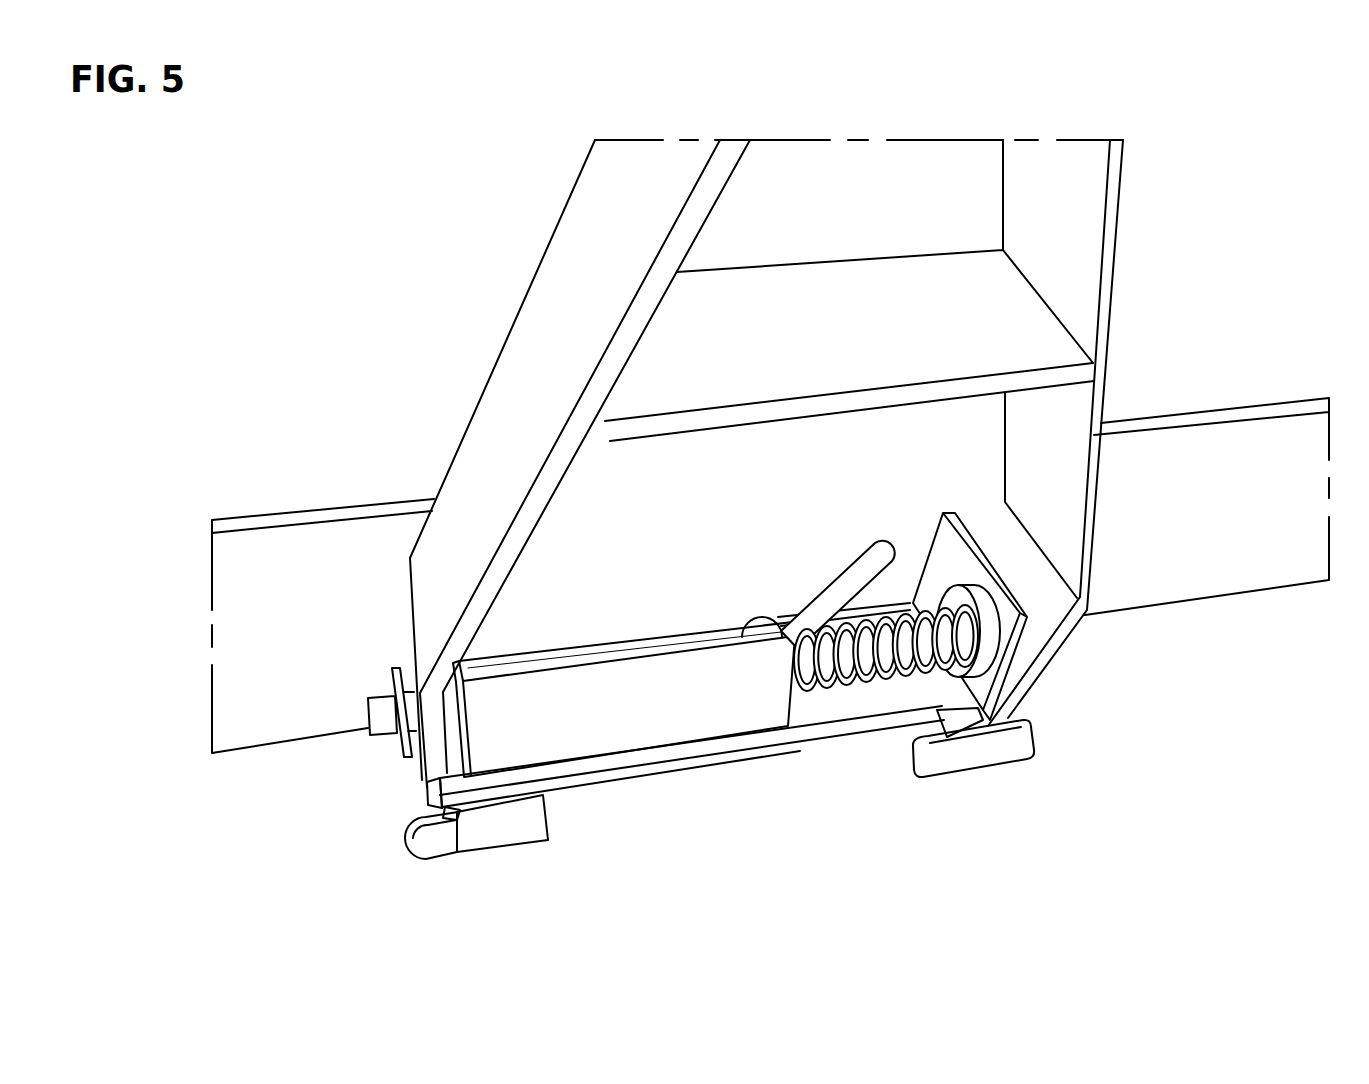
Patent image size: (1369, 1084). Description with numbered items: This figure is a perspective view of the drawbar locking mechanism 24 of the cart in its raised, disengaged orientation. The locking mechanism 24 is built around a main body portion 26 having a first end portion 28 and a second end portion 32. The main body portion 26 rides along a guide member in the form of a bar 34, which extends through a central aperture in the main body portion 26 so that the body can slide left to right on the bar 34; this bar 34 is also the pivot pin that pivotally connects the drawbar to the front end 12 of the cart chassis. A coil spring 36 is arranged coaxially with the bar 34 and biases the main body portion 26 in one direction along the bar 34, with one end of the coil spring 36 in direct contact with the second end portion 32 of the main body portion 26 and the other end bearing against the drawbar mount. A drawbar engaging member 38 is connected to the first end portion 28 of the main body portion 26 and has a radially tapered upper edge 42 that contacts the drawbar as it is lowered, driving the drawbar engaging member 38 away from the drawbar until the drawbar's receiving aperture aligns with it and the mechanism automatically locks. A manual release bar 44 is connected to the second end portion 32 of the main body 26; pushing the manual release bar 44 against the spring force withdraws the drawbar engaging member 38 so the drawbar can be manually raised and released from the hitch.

The front end 12 is at (1222, 545).
The drawbar locking mechanism 24 is at (1085, 675).
The main body portion 26 is at (642, 722).
The first end portion 28 is at (522, 852).
The second end portion 32 is at (768, 765).
The bar 34 is at (868, 655).
The coil spring 36 is at (823, 685).
The drawbar engaging member 38 is at (450, 802).
The radially tapered upper edge 42 is at (433, 793).
The manual release bar 44 is at (853, 580).